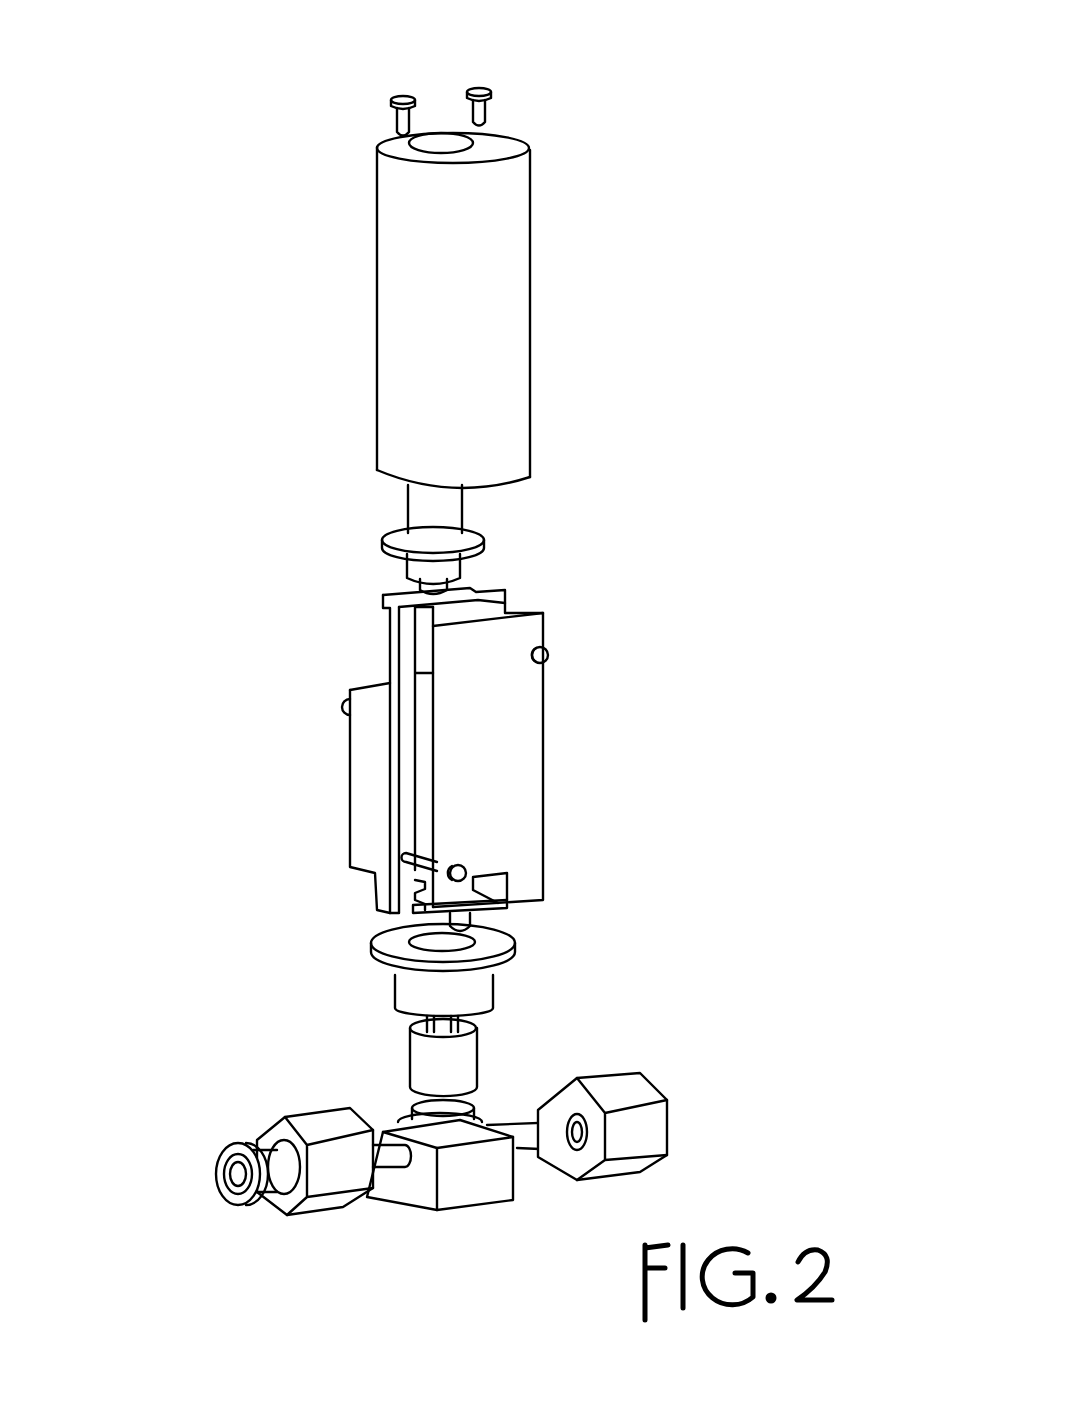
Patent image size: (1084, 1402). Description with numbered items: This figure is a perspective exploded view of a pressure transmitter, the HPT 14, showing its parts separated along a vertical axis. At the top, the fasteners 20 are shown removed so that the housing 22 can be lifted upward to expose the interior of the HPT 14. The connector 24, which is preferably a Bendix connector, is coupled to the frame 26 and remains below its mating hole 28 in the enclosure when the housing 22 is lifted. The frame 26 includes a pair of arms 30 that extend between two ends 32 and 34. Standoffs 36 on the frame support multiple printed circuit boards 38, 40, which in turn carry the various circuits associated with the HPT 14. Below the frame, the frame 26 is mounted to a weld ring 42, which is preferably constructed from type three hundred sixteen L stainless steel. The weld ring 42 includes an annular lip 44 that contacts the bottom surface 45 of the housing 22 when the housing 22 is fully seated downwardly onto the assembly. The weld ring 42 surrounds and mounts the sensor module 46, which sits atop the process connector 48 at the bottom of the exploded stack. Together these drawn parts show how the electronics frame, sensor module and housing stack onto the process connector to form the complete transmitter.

The HPT 14 is at (593, 307).
The fasteners 20 is at (480, 87).
The housing 22 is at (531, 226).
The connector 24 is at (463, 512).
The frame 26 is at (500, 598).
The mating hole 28 is at (418, 148).
The arms 30 is at (390, 645).
The end 32 is at (386, 596).
The end 34 is at (400, 915).
The standoffs 36 is at (549, 656).
The printed circuit board 38 is at (543, 790).
The printed circuit board 40 is at (350, 795).
The weld ring 42 is at (494, 990).
The annular lip 44 is at (520, 950).
The bottom surface 45 is at (532, 479).
The sensor module 46 is at (478, 1062).
The process connector 48 is at (477, 1205).